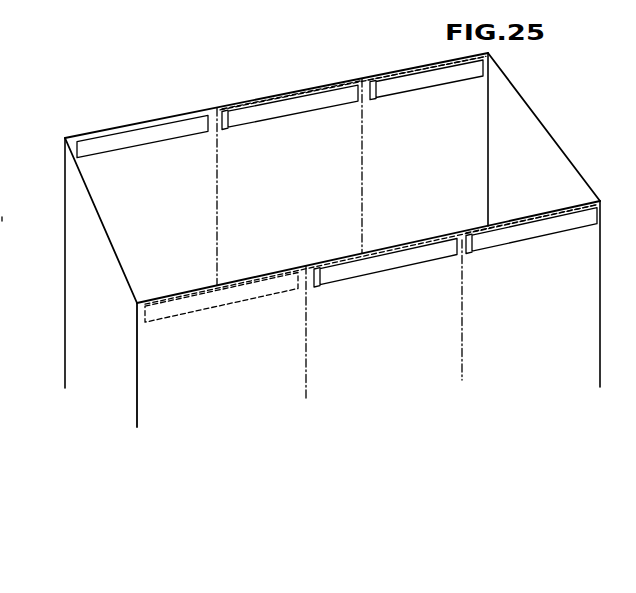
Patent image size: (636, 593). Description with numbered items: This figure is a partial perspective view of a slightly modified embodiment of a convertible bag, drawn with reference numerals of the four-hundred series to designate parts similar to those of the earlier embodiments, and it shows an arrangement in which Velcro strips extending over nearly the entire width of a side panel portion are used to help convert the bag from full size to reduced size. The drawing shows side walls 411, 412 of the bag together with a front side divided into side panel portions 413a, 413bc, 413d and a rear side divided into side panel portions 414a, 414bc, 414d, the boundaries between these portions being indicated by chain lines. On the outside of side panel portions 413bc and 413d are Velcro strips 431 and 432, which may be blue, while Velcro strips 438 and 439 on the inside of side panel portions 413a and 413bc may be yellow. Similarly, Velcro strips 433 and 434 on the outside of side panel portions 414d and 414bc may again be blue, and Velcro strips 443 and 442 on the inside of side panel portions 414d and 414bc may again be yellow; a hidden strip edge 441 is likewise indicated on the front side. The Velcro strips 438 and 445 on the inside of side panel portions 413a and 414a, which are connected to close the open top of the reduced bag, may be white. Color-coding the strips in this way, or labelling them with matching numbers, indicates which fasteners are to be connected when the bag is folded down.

The first side panel 411 is at (80, 297).
The second side panel 412 is at (536, 162).
The side panel portion 413a is at (250, 360).
The side panel portion 413bc is at (420, 357).
The side panel portion 413d is at (562, 335).
The side panel portion 414a is at (183, 210).
The side panel portion 414bc is at (298, 194).
The side panel portion 414d is at (435, 182).
The Velcro strip 431 is at (429, 262).
The Velcro strip 432 is at (536, 240).
The Velcro strip 433 is at (386, 48).
The Velcro strip 434 is at (270, 63).
The Velcro strip 438 is at (196, 287).
The Velcro strip 439 is at (319, 265).
The front hidden fold edge 441 is at (491, 228).
The Velcro strip 442 is at (439, 87).
The Velcro strip 443 is at (301, 108).
The Velcro strip 445 is at (133, 132).